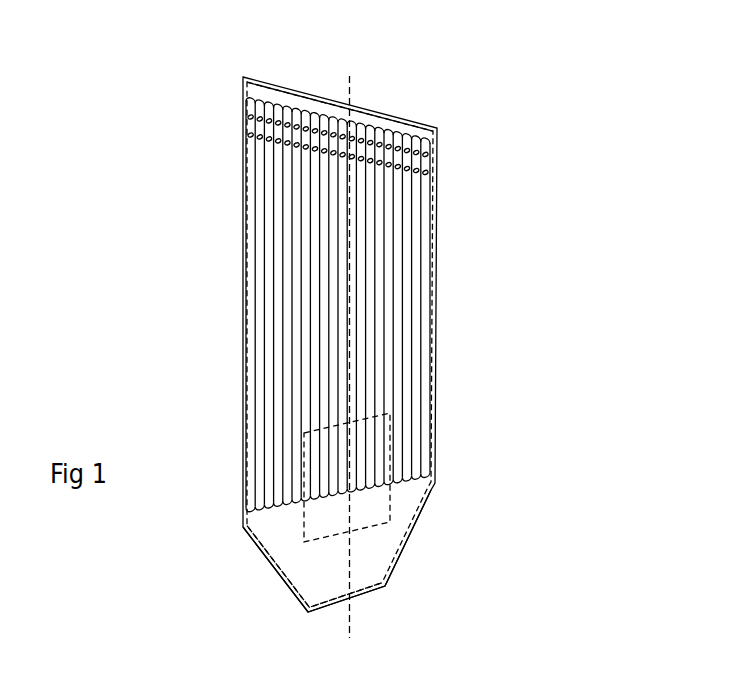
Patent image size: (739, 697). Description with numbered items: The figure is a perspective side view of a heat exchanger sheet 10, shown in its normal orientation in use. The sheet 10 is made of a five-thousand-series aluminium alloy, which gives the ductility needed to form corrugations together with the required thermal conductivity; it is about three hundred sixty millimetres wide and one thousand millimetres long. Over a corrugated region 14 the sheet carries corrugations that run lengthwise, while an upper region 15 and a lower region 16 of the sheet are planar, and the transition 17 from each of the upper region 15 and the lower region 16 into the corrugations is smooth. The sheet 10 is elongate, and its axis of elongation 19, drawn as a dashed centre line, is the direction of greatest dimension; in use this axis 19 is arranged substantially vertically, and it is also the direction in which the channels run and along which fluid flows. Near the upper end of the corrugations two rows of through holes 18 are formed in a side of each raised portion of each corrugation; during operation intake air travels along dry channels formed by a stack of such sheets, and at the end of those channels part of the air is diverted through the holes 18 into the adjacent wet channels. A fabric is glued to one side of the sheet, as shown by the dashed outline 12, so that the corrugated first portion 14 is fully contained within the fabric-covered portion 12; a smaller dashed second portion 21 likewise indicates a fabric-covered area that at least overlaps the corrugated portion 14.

The heat exchanger sheet 10 is at (477, 83).
The dashed outline of fabric portion 12 is at (393, 573).
The corrugated region 14 is at (403, 333).
The upper planar region 15 is at (323, 110).
The lower planar region 16 is at (310, 572).
The transition 17 is at (433, 138).
The through holes 18 is at (430, 177).
The axis of elongation 19 is at (350, 617).
The second portion 21 is at (305, 525).